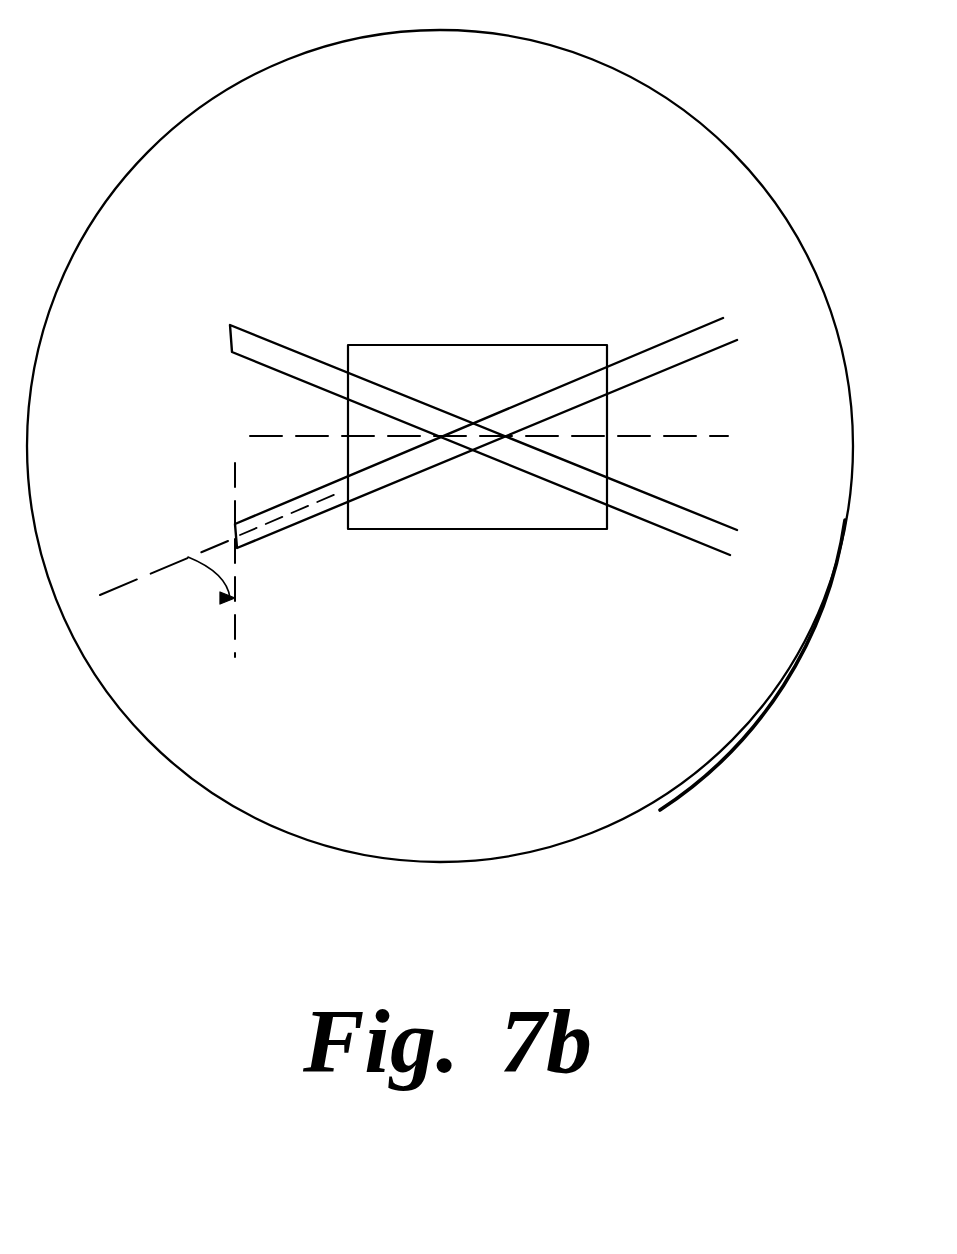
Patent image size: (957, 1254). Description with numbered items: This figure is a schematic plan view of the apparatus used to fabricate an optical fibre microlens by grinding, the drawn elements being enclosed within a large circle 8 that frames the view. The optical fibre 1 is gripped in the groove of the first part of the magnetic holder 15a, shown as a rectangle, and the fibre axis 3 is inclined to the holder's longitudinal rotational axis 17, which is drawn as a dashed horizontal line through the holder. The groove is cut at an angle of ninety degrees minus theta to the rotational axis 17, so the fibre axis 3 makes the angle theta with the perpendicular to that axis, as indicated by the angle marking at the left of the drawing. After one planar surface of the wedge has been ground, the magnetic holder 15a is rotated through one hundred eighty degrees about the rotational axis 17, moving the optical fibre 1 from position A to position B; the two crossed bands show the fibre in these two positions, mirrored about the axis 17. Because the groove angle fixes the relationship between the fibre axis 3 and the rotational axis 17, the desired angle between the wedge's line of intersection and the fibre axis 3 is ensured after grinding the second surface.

The lens 8 is at (680, 150).
The first part of magnetic holder 15a is at (460, 360).
The optical fibre 1 is at (483, 440).
The position A is at (286, 345).
The position B is at (308, 520).
The longitudinal rotational axis 17 is at (710, 436).
The fibre axis 3 is at (113, 585).